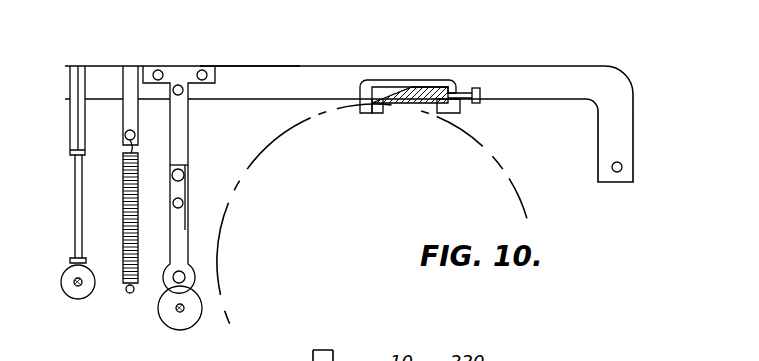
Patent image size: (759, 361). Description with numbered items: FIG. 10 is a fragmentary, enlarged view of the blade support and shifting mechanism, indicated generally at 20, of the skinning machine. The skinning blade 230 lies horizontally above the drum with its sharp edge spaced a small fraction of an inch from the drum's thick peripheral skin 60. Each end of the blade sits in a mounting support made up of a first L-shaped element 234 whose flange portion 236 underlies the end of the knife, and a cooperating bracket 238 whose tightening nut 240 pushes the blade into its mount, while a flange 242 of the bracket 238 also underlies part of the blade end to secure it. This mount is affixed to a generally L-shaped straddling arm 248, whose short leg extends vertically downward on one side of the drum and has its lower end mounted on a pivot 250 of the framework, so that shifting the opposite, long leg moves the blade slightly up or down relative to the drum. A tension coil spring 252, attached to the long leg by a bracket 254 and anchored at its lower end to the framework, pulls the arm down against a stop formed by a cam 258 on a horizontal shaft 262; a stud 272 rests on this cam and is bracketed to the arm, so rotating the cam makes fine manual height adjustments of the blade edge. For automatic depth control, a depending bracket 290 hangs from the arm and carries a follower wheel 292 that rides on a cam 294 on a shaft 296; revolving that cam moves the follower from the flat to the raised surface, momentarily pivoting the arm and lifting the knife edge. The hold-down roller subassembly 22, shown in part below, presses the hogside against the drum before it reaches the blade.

The apparatus 20 is at (308, 61).
The hold-down roller subassembly 22 is at (330, 348).
The peripheral skin 60 is at (300, 133).
The skinning blade 230 is at (421, 92).
The first L-shaped element 234 is at (365, 80).
The flange portion 236 is at (378, 112).
The cooperating bracket 238 is at (457, 80).
The tightening nut 240 is at (479, 89).
The flange 242 is at (462, 113).
The straddling arm 248 is at (283, 33).
The pivot 250 is at (622, 167).
The tension coil spring 252 is at (137, 282).
The bracket 254 is at (127, 82).
The cam 258 is at (80, 287).
The shaft 262 is at (77, 284).
The stud 272 is at (77, 200).
The depending bracket 290 is at (180, 142).
The follower wheel 292 is at (195, 276).
The cam 294 is at (202, 311).
The shaft 296 is at (182, 312).